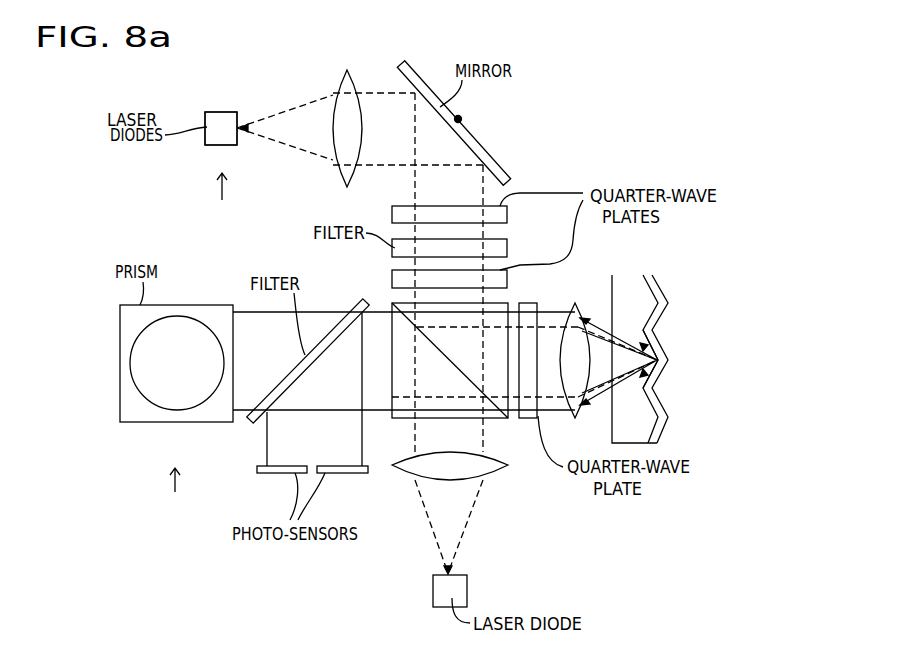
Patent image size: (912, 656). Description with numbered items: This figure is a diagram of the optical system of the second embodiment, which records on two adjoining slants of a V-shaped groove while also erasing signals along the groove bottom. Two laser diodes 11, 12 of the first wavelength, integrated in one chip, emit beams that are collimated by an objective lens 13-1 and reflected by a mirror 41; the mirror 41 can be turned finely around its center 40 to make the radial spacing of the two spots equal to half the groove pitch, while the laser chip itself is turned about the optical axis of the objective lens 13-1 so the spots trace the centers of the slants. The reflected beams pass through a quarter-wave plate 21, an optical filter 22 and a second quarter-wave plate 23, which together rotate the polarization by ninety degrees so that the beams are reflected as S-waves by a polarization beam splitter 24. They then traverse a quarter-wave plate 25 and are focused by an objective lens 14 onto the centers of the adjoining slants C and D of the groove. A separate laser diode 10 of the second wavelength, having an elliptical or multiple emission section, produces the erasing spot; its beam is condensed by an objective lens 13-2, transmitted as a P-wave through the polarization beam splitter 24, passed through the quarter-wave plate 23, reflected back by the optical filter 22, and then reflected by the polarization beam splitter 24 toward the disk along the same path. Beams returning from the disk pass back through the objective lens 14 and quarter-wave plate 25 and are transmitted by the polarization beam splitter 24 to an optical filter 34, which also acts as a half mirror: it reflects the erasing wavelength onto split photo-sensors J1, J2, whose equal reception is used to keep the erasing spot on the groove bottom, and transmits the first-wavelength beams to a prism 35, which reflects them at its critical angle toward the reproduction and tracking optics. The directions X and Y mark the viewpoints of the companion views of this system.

The laser diode 11 is at (220, 112).
The laser diode 12 is at (230, 108).
The objective lens 13-1 is at (341, 186).
The center of the mirror 40 is at (461, 117).
The mirror 41 is at (500, 162).
The quarter-wave plate 21 is at (508, 214).
The optical filter 22 is at (508, 248).
The quarter-wave plate 23 is at (508, 279).
The polarization beam splitter 24 is at (403, 418).
The quarter-wave plate 25 is at (532, 418).
The objective lens 14 is at (563, 416).
The prism 35 is at (199, 305).
The optical filter 34 is at (355, 303).
The split photo-sensor J1 is at (282, 482).
The split photo-sensor J2 is at (342, 482).
The objective lens 13-2 is at (498, 473).
The laser diode 10 is at (467, 588).
The slant D is at (662, 345).
The slant C is at (661, 375).
The viewing direction X is at (174, 494).
The viewing direction Y is at (213, 194).